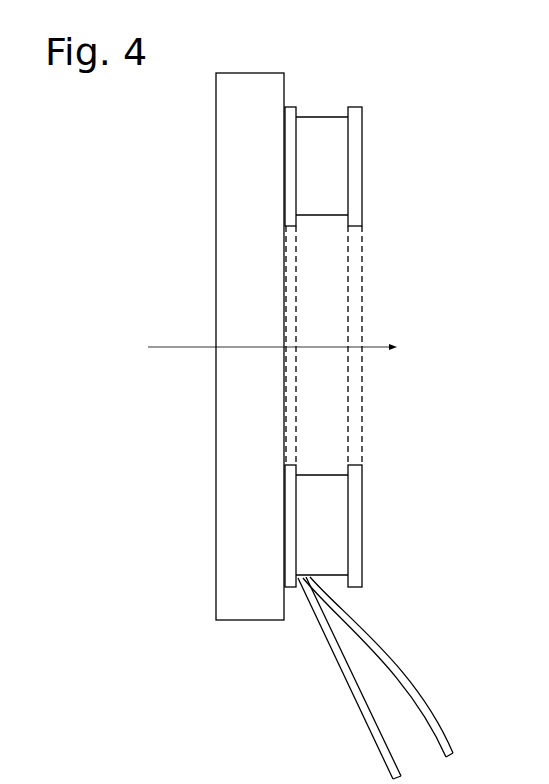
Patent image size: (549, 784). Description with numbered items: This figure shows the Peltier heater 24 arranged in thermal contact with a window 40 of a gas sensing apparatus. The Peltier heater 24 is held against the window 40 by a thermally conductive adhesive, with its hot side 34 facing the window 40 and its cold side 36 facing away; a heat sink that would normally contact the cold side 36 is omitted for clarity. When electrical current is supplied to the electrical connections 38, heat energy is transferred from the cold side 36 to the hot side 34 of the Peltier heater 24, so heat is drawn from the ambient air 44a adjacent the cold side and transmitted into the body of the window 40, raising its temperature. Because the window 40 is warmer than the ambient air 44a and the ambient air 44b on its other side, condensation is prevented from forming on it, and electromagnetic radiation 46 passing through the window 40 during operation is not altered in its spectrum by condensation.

The Peltier heater 24 is at (403, 531).
The hot side 34 is at (288, 110).
The cold side 36 is at (353, 142).
The electrical connections 38 is at (403, 680).
The window 40 is at (235, 182).
The ambient air 44a is at (477, 396).
The ambient air 44b is at (163, 280).
The electromagnetic radiation 46 is at (170, 347).